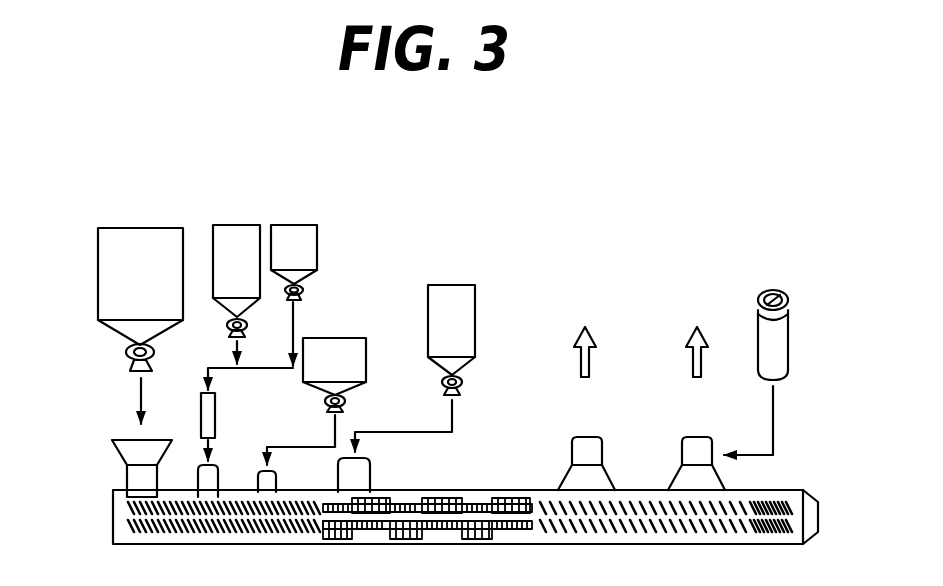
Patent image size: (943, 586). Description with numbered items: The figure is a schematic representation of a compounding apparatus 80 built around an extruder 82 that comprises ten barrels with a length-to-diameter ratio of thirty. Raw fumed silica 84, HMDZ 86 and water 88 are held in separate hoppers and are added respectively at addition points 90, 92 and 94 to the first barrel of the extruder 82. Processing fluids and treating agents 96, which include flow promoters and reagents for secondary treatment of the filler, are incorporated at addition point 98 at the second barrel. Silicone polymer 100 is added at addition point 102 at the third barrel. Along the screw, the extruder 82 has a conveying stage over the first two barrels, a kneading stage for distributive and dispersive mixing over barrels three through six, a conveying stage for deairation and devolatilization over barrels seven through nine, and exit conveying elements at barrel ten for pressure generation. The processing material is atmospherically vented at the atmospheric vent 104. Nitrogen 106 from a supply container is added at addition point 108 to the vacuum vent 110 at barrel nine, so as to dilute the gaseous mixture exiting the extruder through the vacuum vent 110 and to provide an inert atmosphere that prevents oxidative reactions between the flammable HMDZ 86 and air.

The extrusion system 80 is at (470, 190).
The extruder 82 is at (113, 505).
The raw fumed silica 84 is at (140, 228).
The HMDZ 86 is at (236, 225).
The water 88 is at (297, 225).
The addition point for raw fumed silica 90 is at (137, 395).
The addition point for HMDZ 92 is at (237, 352).
The addition point for water 94 is at (300, 323).
The processing fluids and treating agents 96 is at (345, 338).
The addition point for processing fluids and treating agents 98 is at (335, 423).
The silicone polymer 100 is at (455, 285).
The addition point for silicone polymer 102 is at (430, 432).
The atmospheric vent 104 is at (602, 452).
The nitrogen 106 is at (790, 340).
The addition point for nitrogen 108 is at (774, 430).
The vacuum vent 110 is at (715, 447).